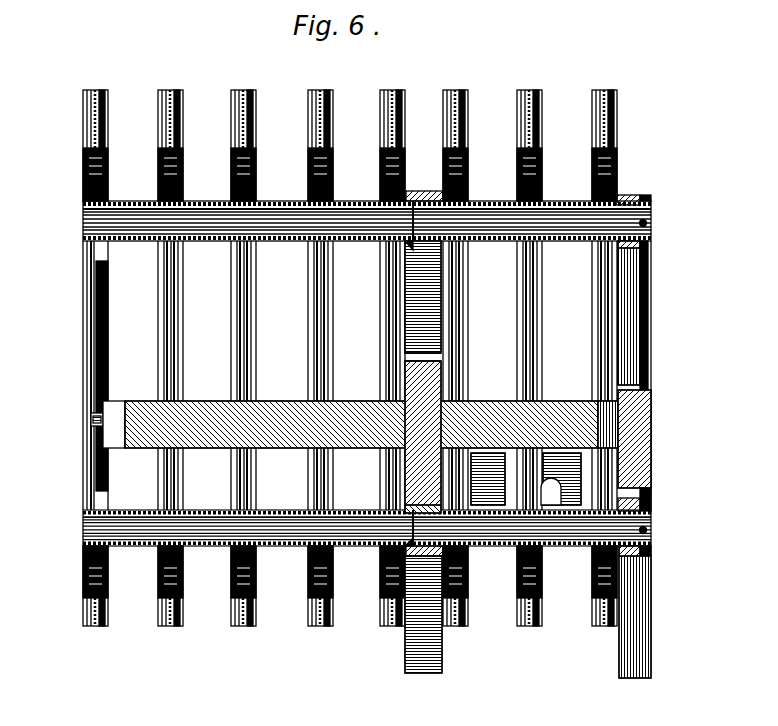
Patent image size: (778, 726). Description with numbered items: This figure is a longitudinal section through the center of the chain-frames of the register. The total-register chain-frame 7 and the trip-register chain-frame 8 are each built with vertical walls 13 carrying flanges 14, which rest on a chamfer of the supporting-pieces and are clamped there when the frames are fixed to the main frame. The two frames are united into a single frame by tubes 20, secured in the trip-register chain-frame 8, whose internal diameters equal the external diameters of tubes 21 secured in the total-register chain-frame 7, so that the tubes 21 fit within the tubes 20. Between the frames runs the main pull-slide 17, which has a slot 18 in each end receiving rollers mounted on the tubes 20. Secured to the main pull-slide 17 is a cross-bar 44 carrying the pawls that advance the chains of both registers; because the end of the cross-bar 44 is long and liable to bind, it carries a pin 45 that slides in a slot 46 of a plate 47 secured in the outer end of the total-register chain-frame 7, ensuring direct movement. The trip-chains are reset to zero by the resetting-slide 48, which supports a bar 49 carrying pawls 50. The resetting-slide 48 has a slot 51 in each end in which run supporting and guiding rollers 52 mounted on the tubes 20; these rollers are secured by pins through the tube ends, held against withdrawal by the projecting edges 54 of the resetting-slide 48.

The total-register chain-frame 7 is at (177, 142).
The trip-register chain-frame 8 is at (529, 135).
The vertical walls 13 is at (350, 354).
The flanges 14 is at (325, 622).
The main pull-slide 17 is at (432, 372).
The slot 18 is at (425, 322).
The tubes 20 is at (480, 194).
The tubes 21 is at (396, 236).
The cross-bar 44 is at (267, 393).
The pin 45 is at (83, 413).
The slot 46 is at (90, 350).
The plate 47 is at (88, 262).
The resetting-slide 48 is at (645, 410).
The bar 49 is at (592, 392).
The pawls 50 is at (575, 478).
The slot 51 is at (622, 290).
The rollers 52 is at (642, 192).
The projecting edges 54 is at (644, 215).